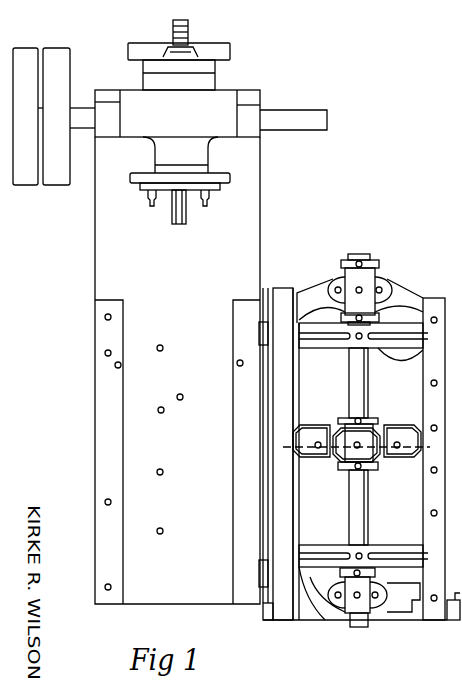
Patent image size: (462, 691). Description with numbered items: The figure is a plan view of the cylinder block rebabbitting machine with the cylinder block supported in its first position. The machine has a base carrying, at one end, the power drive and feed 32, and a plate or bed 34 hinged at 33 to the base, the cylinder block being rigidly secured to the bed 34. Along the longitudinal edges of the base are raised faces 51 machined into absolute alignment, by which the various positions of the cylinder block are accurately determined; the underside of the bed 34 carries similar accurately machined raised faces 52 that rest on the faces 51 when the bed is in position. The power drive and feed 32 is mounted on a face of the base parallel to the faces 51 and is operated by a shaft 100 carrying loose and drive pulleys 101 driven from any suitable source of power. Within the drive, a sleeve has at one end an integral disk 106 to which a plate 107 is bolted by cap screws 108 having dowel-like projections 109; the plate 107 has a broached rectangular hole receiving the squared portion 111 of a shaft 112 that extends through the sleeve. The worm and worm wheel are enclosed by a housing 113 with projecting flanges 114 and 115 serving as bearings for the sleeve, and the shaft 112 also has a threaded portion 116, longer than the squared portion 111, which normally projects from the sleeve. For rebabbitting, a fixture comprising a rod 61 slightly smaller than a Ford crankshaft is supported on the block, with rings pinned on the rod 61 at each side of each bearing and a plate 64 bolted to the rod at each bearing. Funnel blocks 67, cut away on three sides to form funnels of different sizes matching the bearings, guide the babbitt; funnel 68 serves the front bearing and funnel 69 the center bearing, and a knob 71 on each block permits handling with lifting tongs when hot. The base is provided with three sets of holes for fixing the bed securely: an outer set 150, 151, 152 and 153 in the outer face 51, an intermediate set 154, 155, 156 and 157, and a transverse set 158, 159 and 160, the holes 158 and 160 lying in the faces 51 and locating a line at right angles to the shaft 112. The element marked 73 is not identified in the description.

The power drive and feed 32 is at (211, 113).
The hinge 33 is at (270, 300).
The plate or bed 34 is at (282, 620).
The raised faces 51 is at (109, 298).
The raised faces 52 is at (268, 620).
The rod 61 is at (360, 628).
The plate 64 is at (366, 280).
The funnel blocks 67 is at (319, 438).
The funnel 68 is at (287, 440).
The funnel 69 is at (331, 440).
The knob 71 is at (317, 452).
The center pin 73 is at (398, 555).
The shaft 100 is at (82, 106).
The loose and drive pulleys 101 is at (27, 187).
The disk 106 is at (200, 178).
The plate 107 is at (220, 190).
The cap screws 108 is at (207, 201).
The dowel like projections 109 is at (150, 203).
The squared portion 111 is at (218, 62).
The shaft 112 is at (176, 225).
The housing 113 is at (232, 49).
The flange 114 is at (210, 155).
The flange 115 is at (208, 83).
The threaded portion 116 is at (189, 25).
The hole 150 is at (104, 317).
The hole 151 is at (104, 353).
The hole 152 is at (104, 502).
The hole 153 is at (104, 587).
The hole 154 is at (163, 346).
The hole 155 is at (164, 413).
The hole 156 is at (163, 470).
The hole 157 is at (163, 529).
The hole 158 is at (121, 368).
The hole 159 is at (184, 397).
The hole 160 is at (237, 366).